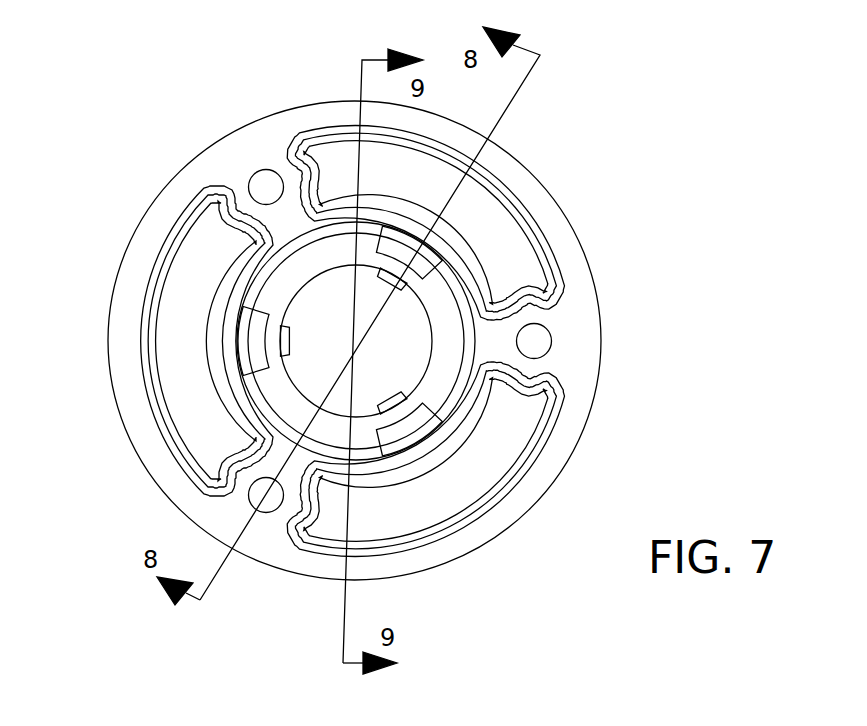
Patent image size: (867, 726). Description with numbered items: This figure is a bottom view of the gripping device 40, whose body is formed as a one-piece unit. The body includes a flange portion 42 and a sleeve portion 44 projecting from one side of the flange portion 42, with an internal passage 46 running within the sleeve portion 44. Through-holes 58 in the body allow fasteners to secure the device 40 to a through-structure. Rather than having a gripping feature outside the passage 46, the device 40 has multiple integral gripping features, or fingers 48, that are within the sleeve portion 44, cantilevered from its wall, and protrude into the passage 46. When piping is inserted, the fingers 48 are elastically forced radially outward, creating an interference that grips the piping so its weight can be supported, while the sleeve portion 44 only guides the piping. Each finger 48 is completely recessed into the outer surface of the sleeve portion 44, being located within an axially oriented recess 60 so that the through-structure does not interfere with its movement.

The gripping device 40 is at (688, 153).
The flange portion 42 is at (592, 348).
The sleeve portion 44 is at (443, 299).
The internal passage 46 is at (314, 312).
The gripping features (fingers) 48 is at (287, 346).
The through-holes 58 is at (258, 172).
The recess 60 is at (390, 233).